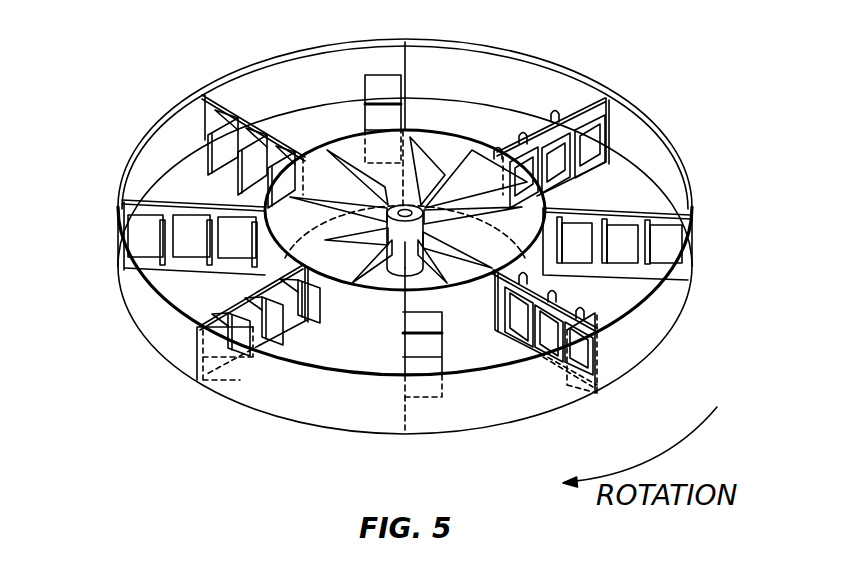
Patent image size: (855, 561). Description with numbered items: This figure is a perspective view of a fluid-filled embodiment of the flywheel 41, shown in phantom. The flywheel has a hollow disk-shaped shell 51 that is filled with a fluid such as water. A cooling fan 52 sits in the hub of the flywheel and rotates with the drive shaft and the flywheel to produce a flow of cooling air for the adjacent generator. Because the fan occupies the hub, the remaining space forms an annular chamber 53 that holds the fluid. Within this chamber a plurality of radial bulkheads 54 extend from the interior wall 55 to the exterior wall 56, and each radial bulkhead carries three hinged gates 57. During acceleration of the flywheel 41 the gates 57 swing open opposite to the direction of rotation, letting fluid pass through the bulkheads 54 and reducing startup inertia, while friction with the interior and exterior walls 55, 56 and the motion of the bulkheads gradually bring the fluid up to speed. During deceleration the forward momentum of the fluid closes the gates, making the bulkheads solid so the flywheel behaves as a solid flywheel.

The flywheel 41 is at (652, 56).
The hollow disk-shaped shell 51 is at (690, 164).
The cooling fan 52 is at (465, 163).
The annular chamber 53 is at (177, 288).
The radial bulkheads 54 is at (210, 113).
The interior wall 55 is at (345, 323).
The exterior wall 56 is at (305, 400).
The hinged gates 57 is at (390, 76).